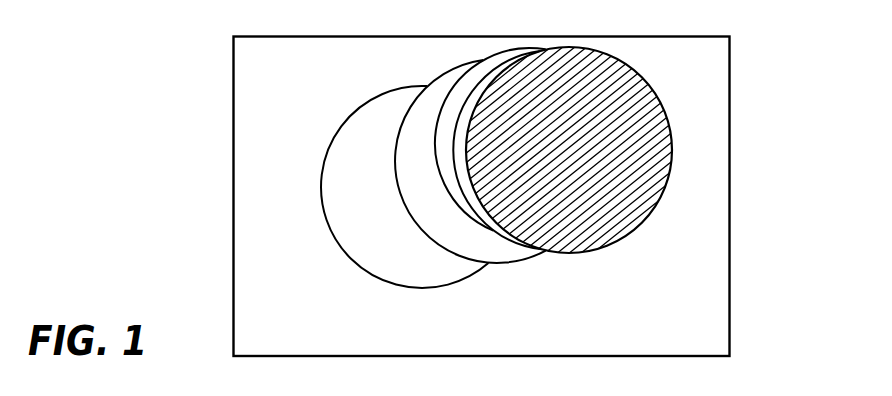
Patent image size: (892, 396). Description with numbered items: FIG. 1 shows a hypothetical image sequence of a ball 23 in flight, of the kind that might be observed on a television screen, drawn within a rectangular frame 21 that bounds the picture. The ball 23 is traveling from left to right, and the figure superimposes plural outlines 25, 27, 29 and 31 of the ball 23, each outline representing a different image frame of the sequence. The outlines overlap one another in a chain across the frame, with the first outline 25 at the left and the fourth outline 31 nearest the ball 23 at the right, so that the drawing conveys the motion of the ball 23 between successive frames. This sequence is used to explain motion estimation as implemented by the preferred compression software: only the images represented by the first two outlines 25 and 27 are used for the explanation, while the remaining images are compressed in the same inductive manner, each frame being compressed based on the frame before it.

The base layer / substrate panel 21 is at (725, 290).
The ball 23 is at (663, 112).
The first outline 25 is at (332, 172).
The second outline 27 is at (418, 133).
The third outline 29 is at (460, 84).
The fourth outline 31 is at (509, 66).